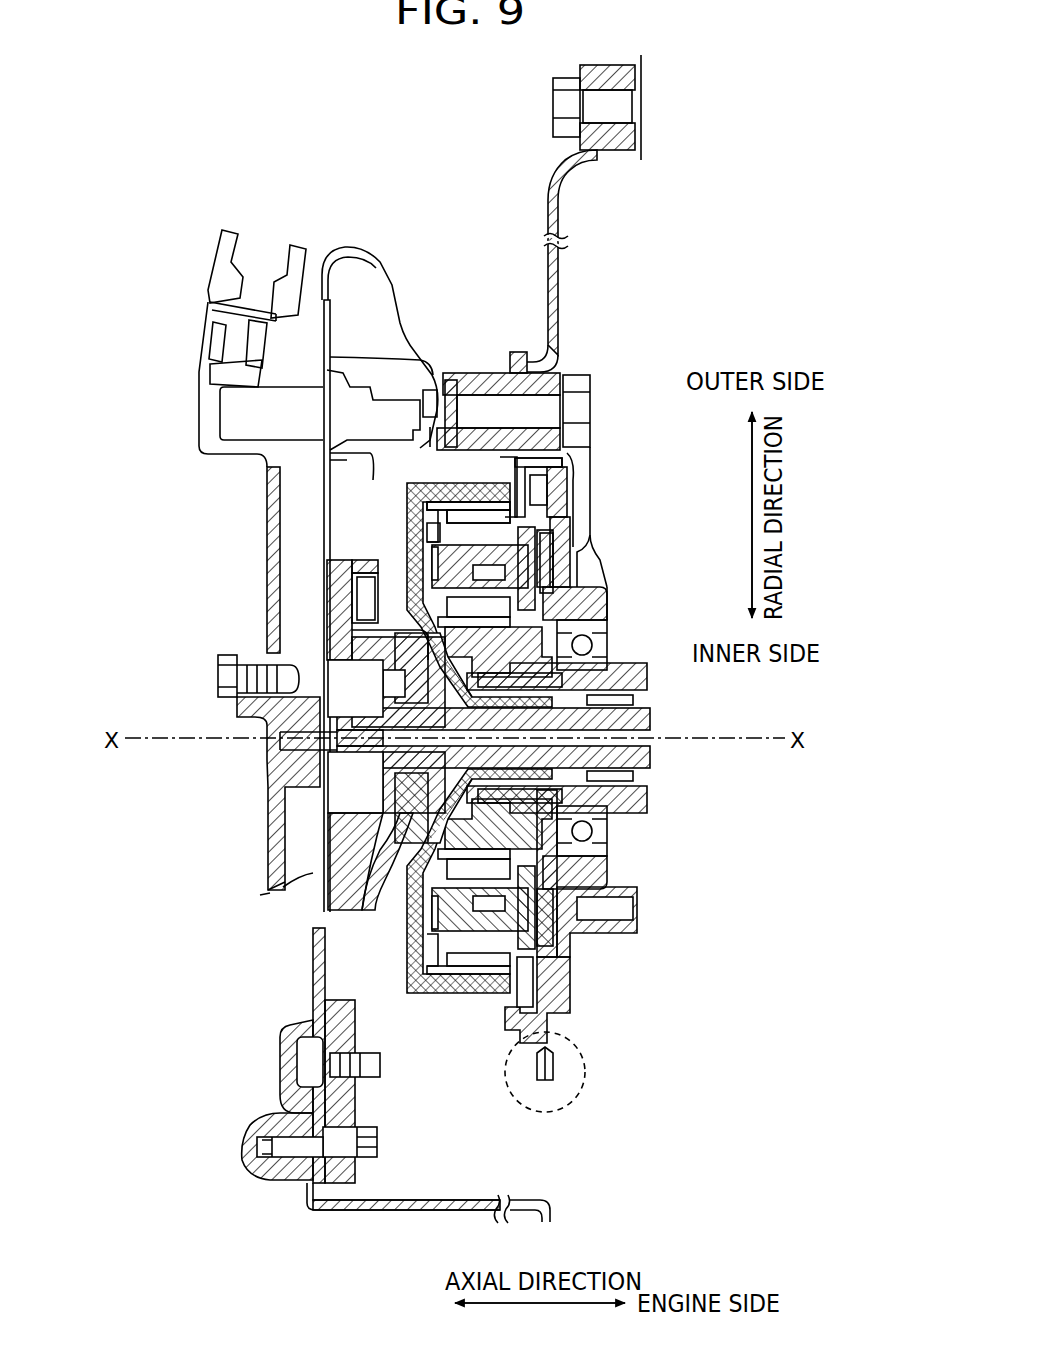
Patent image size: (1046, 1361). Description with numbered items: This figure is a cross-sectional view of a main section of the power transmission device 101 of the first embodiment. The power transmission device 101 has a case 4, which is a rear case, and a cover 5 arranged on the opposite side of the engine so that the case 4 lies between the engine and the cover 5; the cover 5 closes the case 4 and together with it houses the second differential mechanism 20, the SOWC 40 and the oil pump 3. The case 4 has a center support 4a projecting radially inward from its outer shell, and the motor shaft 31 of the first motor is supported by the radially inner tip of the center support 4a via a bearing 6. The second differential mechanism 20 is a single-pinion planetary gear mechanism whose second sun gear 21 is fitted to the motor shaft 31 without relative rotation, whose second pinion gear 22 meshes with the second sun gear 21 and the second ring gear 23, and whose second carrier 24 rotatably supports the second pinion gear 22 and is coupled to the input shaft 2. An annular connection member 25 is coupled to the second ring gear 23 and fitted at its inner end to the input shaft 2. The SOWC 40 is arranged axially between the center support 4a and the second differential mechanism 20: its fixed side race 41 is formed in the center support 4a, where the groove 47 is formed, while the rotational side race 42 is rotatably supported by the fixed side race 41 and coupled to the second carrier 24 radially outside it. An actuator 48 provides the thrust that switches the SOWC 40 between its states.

The power transmission device 101 is at (268, 170).
The second differential mechanism 20 is at (462, 465).
The cover 5 is at (545, 303).
The SOWC 40 is at (499, 470).
The case 4 is at (556, 366).
The groove 47 is at (568, 480).
The fixed side race 41 is at (565, 466).
The rotational side race 42 is at (540, 498).
The second ring gear 23 is at (437, 507).
The second pinion gear 22 is at (457, 527).
The connection member 25 is at (433, 550).
The second carrier 24 is at (602, 587).
The center support 4a is at (605, 605).
The second sun gear 21 is at (437, 627).
The bearing 6 is at (608, 628).
The motor shaft 31 is at (628, 652).
The oil pump 3 is at (318, 713).
The input shaft 2 is at (650, 720).
The actuator 48 is at (535, 1090).